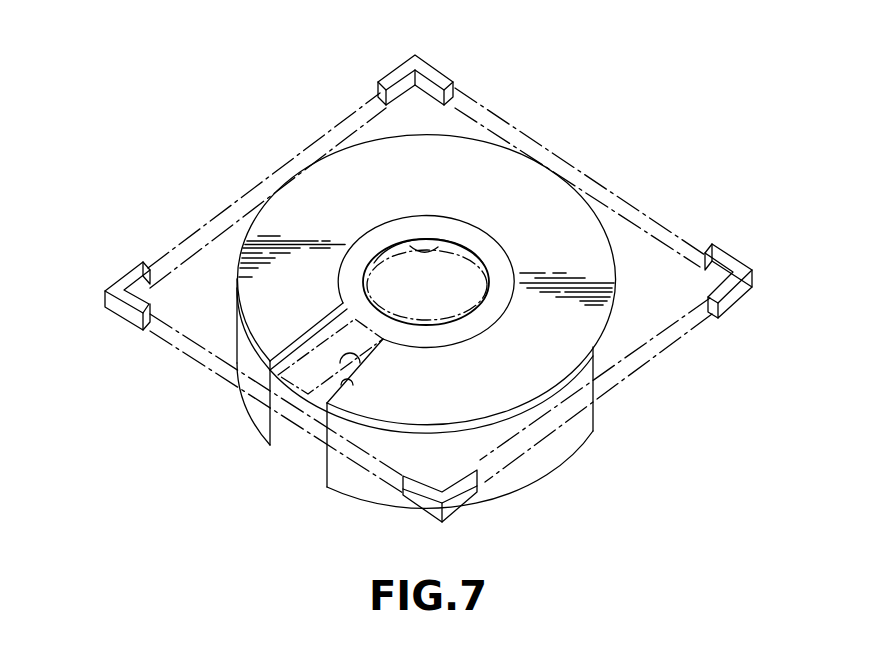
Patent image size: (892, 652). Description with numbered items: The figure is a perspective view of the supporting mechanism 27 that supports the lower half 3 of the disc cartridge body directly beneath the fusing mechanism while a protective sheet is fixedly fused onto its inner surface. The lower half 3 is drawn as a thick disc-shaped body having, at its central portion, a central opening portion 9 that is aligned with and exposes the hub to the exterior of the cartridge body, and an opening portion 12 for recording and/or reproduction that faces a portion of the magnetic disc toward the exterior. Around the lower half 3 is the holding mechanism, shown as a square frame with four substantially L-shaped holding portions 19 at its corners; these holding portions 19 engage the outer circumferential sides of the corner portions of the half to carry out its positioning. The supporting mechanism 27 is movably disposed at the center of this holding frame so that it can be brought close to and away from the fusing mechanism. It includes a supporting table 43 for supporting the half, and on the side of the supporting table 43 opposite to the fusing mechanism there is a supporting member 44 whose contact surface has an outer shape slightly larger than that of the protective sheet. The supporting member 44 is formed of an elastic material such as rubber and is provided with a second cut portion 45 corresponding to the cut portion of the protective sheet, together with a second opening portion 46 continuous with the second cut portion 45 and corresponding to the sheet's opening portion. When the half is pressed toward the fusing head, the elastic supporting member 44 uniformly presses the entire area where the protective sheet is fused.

The lower half 3 is at (440, 282).
The central opening portion 9 is at (443, 250).
The opening portion 12 is at (362, 355).
The holding portion 19 is at (420, 65).
The supporting mechanism 27 is at (667, 195).
The supporting table 43 is at (543, 462).
The supporting member 44 is at (387, 437).
The second cut portion 45 is at (348, 386).
The second opening portion 46 is at (490, 314).